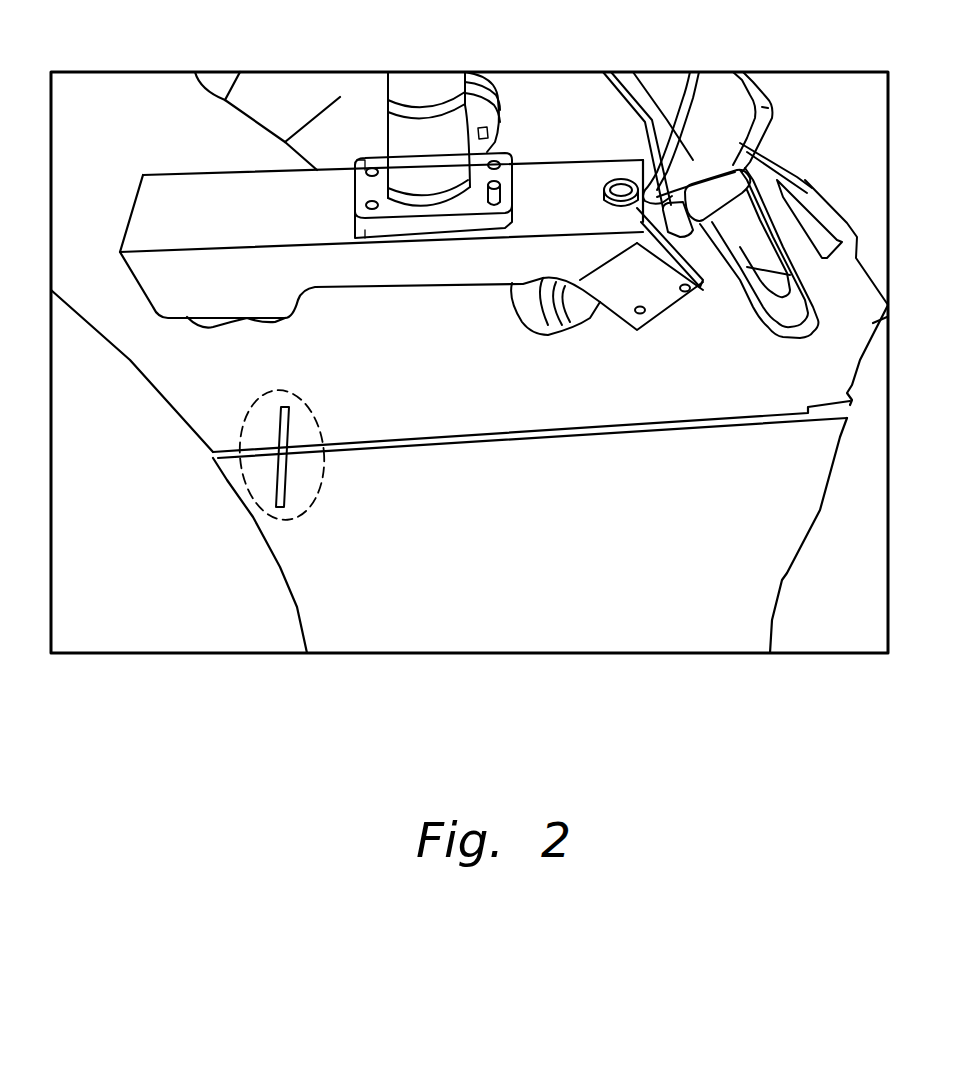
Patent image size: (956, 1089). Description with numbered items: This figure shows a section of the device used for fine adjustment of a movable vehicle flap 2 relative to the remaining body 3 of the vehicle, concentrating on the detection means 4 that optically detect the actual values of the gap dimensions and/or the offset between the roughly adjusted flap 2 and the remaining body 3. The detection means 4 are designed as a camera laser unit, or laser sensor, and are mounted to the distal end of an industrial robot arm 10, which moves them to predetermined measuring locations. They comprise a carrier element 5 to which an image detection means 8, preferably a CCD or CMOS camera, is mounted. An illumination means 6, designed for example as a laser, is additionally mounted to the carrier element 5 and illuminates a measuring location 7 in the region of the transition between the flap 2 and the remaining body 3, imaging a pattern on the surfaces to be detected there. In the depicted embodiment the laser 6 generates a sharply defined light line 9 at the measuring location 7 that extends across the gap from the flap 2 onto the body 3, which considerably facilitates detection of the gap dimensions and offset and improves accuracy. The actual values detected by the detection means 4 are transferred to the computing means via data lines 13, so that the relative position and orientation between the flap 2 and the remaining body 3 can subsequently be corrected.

The flap 2 is at (462, 432).
The remaining body 3 is at (547, 492).
The detection means 4 is at (168, 190).
The carrier element 5 is at (340, 262).
The illumination means 6 is at (220, 322).
The measuring location 7 is at (297, 510).
The image detection means 8 is at (557, 322).
The light line 9 is at (280, 430).
The industrial robot arm 10 is at (450, 167).
The data lines 13 is at (732, 290).